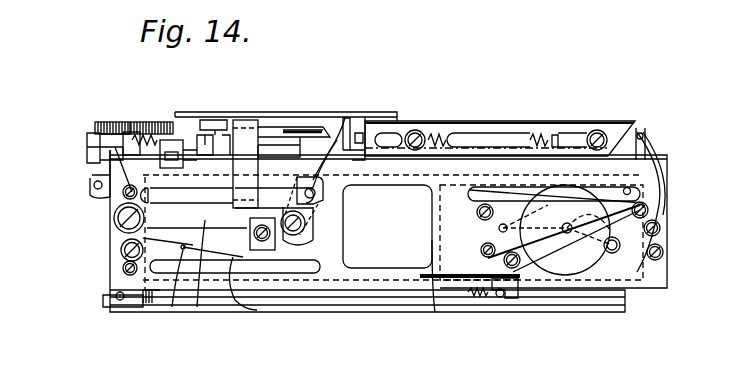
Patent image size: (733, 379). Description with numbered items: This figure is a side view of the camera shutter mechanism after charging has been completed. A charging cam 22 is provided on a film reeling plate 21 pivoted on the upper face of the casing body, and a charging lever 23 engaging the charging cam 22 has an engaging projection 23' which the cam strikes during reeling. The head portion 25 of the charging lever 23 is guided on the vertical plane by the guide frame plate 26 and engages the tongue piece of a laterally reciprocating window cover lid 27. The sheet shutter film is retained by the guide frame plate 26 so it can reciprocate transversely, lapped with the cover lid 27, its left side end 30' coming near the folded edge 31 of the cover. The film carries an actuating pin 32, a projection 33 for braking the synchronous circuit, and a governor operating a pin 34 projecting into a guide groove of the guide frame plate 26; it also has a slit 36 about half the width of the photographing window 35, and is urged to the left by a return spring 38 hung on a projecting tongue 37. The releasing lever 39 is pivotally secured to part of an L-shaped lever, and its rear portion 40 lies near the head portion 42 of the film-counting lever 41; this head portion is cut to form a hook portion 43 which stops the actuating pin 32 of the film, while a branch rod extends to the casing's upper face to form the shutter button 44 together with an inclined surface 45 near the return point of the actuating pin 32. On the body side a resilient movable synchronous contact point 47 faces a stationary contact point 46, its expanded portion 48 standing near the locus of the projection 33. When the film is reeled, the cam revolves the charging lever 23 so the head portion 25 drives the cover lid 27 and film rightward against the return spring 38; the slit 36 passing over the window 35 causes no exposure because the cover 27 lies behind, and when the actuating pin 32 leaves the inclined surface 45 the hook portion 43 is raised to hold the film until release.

The film reeling plate 21 is at (176, 130).
The charging cam 22 is at (300, 133).
The charging lever 23 is at (226, 119).
The engaging projection 23' is at (204, 119).
The head portion 25 is at (148, 126).
The guide frame plate 26 is at (482, 172).
The window cover lid 27 is at (130, 124).
The left side end 30' is at (387, 273).
The folded edge 31 is at (157, 300).
The actuating pin 32 is at (316, 188).
The projection for braking circuit 33 is at (305, 272).
The pin 34 is at (632, 192).
The photographing window 35 is at (433, 262).
The slit 36 is at (468, 270).
The tongue 37 is at (525, 292).
The return spring 38 is at (488, 300).
The releasing lever 39 is at (197, 308).
The rear portion 40 is at (104, 164).
The film-counting lever 41 is at (92, 152).
The head portion 42 is at (95, 124).
The hook portion 43 is at (337, 140).
The shutter button 44 is at (252, 150).
The inclined surface 45 is at (114, 222).
The stationary contact point 46 is at (122, 252).
The movable synchronous contact point 47 is at (172, 308).
The expanded portion 48 is at (257, 308).